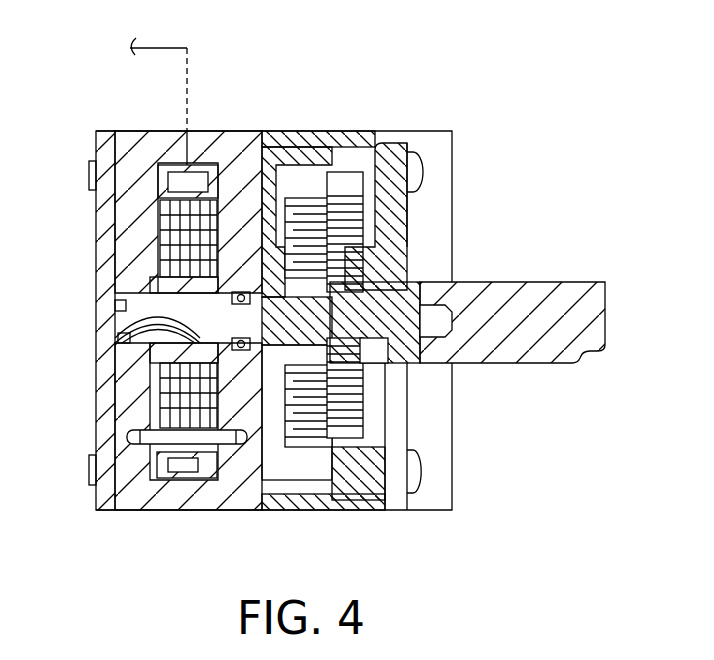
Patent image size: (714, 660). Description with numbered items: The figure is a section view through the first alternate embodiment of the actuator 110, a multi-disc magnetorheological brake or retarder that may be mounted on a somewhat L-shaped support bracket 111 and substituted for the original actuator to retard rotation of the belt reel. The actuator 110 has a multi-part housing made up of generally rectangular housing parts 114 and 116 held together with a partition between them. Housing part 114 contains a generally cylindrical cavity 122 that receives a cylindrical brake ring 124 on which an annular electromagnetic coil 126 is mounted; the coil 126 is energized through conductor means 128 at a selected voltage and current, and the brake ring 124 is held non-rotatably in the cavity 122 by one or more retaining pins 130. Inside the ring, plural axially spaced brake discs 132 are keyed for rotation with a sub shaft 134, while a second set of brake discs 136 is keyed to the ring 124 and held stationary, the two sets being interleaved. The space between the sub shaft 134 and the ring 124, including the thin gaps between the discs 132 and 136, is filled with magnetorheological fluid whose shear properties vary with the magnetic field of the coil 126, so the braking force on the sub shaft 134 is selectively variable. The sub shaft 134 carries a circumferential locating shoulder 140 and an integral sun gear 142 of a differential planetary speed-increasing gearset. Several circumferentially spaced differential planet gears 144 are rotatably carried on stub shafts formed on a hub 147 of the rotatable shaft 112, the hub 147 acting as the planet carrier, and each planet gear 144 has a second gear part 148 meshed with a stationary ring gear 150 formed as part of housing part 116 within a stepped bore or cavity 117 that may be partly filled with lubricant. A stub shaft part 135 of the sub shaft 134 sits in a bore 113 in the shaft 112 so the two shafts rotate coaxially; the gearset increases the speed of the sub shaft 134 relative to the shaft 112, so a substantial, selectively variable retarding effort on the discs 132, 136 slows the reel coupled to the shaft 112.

The actuator 110 is at (365, 90).
The support bracket 111 is at (97, 214).
The rotatable shaft 112 is at (515, 281).
The bore 113 is at (385, 350).
The housing part 114 is at (168, 512).
The housing part 116 is at (352, 183).
The stepped bore or cavity 117 is at (257, 500).
The cylindrical cavity 122 is at (170, 472).
The brake ring 124 is at (152, 131).
The electromagnetic coil 126 is at (197, 131).
The conductor means 128 is at (166, 48).
The retaining pin 130 is at (130, 437).
The brake discs 132 is at (156, 342).
The sub shaft 134 is at (100, 333).
The stub shaft part 135 is at (400, 281).
The brake discs 136 is at (97, 184).
The locating shoulder 140 is at (270, 190).
The sun gear 142 is at (380, 395).
The differential planet gears 144 is at (302, 198).
The hub 147 is at (395, 425).
The second gear part 148 is at (352, 226).
The ring gear 150 is at (397, 150).